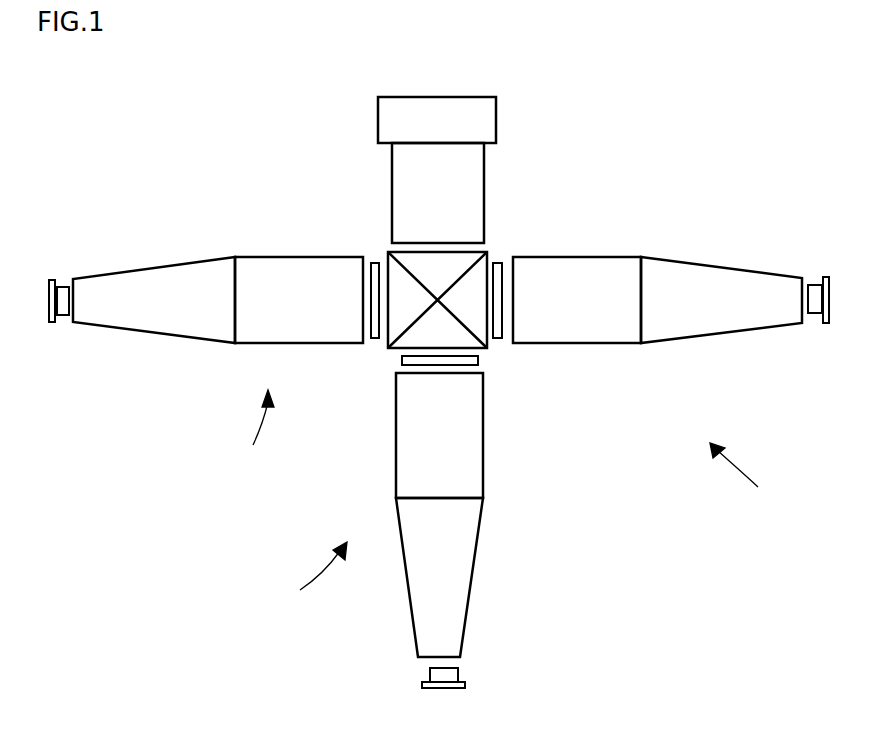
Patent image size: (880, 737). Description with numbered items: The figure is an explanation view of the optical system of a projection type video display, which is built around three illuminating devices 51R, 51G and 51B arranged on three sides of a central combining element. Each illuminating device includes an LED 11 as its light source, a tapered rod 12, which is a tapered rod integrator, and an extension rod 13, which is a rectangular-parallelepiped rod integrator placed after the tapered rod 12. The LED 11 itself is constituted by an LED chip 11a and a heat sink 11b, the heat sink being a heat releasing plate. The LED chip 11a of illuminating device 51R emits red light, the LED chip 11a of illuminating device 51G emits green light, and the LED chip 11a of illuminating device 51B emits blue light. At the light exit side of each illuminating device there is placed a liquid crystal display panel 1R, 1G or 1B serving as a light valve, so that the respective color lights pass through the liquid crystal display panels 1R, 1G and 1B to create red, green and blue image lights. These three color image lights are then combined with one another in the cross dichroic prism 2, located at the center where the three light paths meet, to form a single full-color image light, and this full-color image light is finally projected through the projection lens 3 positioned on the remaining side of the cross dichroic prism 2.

The cross dichroic prism 2 is at (487, 252).
The projection lens 3 is at (477, 154).
The liquid crystal display panel 1R is at (375, 263).
The liquid crystal display panel 1G is at (380, 360).
The liquid crystal display panel 1B is at (498, 340).
The LED 11 is at (443, 454).
The LED chip 11a is at (62, 313).
The heat sink 11b is at (143, 392).
The tapered rod 12 is at (152, 280).
The extension rod 13 is at (285, 272).
The illuminating device 51R is at (247, 431).
The illuminating device 51G is at (302, 571).
The illuminating device 51B is at (756, 475).